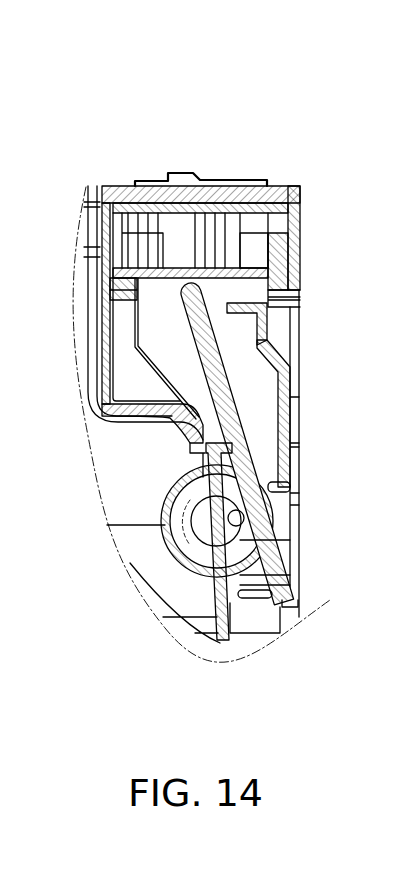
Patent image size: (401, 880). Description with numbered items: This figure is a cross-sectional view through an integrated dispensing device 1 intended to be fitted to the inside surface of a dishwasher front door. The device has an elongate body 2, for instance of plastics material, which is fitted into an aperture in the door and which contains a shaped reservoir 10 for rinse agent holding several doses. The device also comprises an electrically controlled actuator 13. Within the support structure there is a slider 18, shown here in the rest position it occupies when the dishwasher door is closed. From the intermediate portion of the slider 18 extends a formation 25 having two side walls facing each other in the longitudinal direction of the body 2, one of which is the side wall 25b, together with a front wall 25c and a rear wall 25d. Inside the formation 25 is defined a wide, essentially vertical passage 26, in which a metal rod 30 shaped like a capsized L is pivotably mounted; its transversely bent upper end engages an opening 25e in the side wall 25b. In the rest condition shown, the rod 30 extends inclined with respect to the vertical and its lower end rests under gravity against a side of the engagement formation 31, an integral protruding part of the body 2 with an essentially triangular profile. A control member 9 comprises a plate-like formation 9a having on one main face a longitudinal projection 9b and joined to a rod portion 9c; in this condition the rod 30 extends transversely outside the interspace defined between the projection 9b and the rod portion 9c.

The integrated dispensing device 1 is at (113, 161).
The elongate body 2 is at (140, 181).
The electrically controlled actuator 13 is at (301, 222).
The formation 25 is at (299, 407).
The side wall 25b is at (242, 327).
The front wall 25c is at (292, 372).
The rear wall 25d is at (200, 447).
The opening 25e is at (213, 285).
The slider 18 is at (152, 297).
The rod 30 is at (162, 388).
The passage 26 is at (268, 399).
The reservoir 10 is at (147, 508).
The control member 9 is at (213, 538).
The plate-like formation 9a is at (250, 604).
The longitudinal projection 9b is at (247, 522).
The rod portion 9c is at (291, 490).
The engagement formation 31 is at (280, 618).